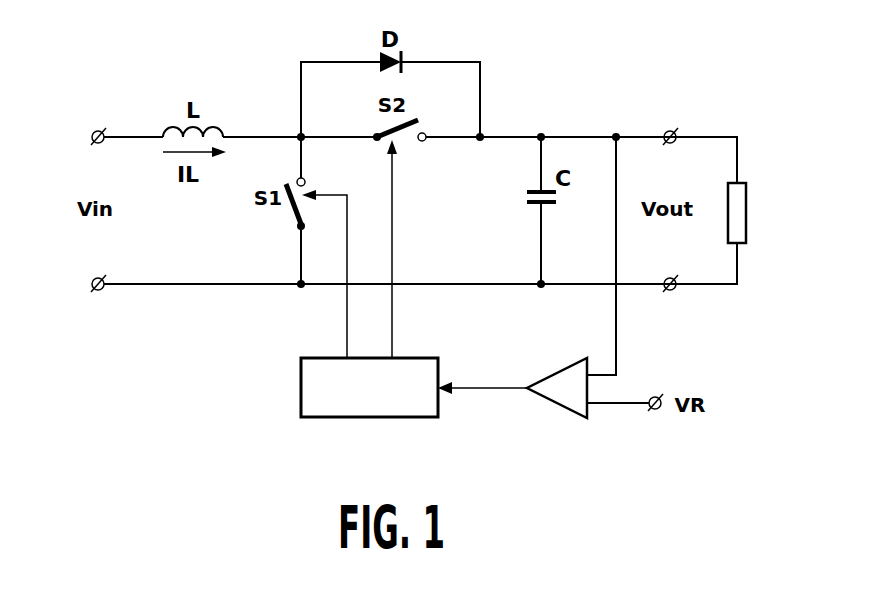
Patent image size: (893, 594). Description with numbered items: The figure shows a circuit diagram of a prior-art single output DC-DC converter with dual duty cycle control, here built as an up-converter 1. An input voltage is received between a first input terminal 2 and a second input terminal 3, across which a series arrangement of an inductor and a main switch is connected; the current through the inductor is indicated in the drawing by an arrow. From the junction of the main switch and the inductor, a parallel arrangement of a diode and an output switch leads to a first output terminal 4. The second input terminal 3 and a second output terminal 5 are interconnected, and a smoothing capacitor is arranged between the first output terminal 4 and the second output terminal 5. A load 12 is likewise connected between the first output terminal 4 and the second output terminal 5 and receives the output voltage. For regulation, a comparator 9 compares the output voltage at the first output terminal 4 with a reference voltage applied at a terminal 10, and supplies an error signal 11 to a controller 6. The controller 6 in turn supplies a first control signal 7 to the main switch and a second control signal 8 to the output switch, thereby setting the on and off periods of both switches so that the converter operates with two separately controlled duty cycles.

The up-converter 1 is at (200, 378).
The first input terminal 2 is at (92, 137).
The second input terminal 3 is at (92, 284).
The first output terminal 4 is at (669, 130).
The second output terminal 5 is at (671, 292).
The controller 6 is at (330, 408).
The control signal 7 is at (345, 323).
The control signal 8 is at (394, 212).
The comparator 9 is at (560, 395).
The terminal 10 is at (656, 410).
The error signal 11 is at (501, 384).
The load 12 is at (746, 215).